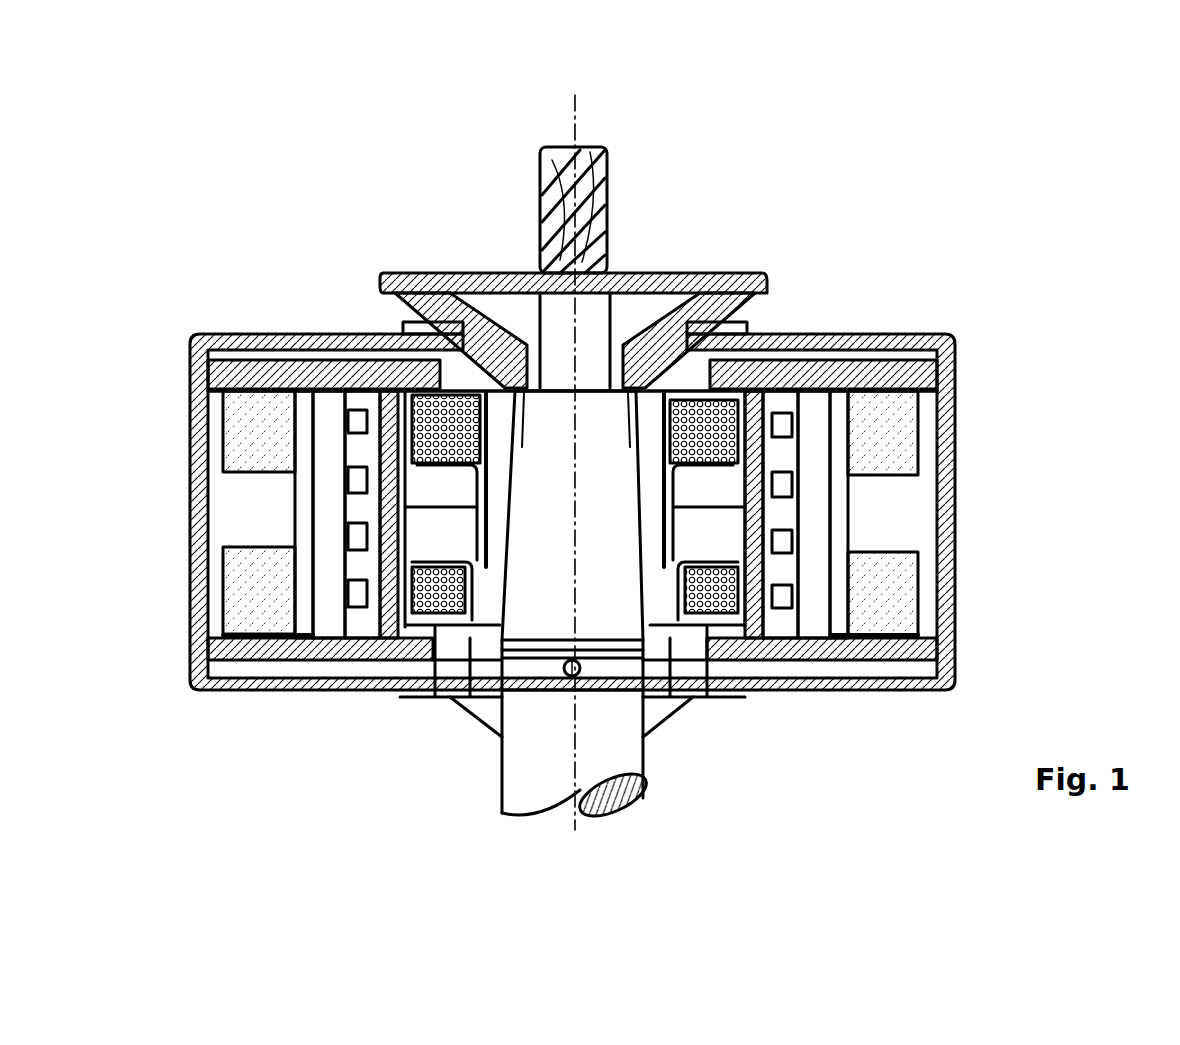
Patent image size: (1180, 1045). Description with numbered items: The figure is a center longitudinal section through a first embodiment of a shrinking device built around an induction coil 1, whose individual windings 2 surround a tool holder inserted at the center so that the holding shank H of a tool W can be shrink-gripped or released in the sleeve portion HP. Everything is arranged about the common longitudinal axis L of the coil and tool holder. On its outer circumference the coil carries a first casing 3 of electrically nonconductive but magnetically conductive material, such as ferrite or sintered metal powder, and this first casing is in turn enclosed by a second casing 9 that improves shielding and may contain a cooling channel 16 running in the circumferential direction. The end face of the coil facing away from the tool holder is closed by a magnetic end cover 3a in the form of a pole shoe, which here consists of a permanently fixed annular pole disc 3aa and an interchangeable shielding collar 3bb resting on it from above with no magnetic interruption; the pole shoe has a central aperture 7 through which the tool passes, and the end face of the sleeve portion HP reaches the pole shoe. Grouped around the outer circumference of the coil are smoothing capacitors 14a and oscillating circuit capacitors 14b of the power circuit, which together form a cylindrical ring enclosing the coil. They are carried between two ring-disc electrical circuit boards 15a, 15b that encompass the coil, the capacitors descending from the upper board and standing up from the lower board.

The induction coil 1 is at (216, 182).
The windings 2 is at (435, 627).
The first casing 3 is at (390, 627).
The magnetic end cover 3a is at (218, 322).
The annular pole disc 3aa is at (830, 330).
The shielding collar 3bb is at (388, 278).
The aperture of pole shoe 7 is at (540, 335).
The second casing 9 is at (327, 400).
The smoothing capacitor 14a is at (258, 417).
The oscillating circuit capacitor 14b is at (255, 618).
The electrical circuit board 15a is at (922, 395).
The electrical circuit board 15b is at (900, 630).
The cooling channel 16 is at (787, 427).
The mounting shank of the tool H is at (610, 460).
The sleeve portion of the tool holder HP is at (758, 392).
The longitudinal axis L is at (583, 112).
The tool W is at (613, 197).